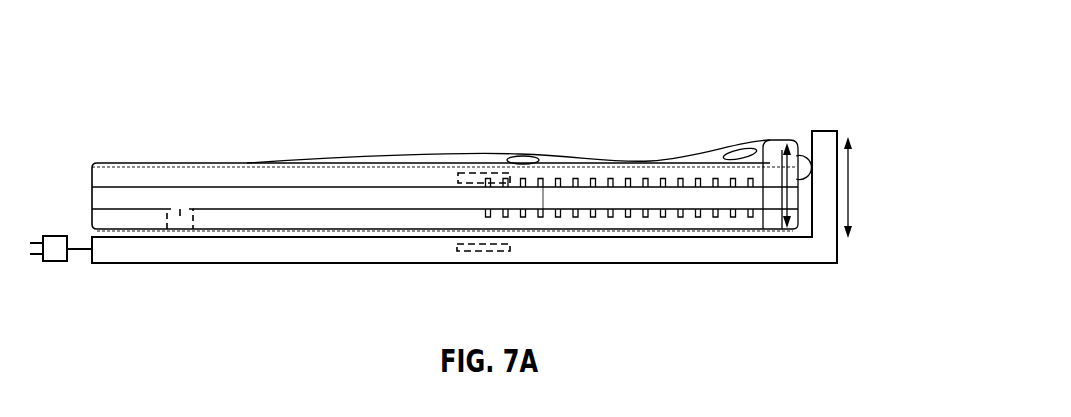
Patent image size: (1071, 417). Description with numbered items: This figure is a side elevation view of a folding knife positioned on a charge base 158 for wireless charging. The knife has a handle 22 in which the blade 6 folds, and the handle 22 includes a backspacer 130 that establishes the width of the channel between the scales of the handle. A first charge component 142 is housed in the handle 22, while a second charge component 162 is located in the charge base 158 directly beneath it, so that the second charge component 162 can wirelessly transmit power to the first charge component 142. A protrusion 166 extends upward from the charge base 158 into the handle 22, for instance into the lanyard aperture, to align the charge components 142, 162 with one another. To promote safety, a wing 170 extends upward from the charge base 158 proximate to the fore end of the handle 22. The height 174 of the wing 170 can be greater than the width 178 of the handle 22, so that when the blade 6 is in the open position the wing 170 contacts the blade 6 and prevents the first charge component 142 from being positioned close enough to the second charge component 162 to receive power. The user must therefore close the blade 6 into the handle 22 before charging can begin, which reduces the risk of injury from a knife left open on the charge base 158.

The handle 22 is at (869, 39).
The blade 6 is at (670, 197).
The backspacer 130 is at (387, 205).
The first charge component 142 is at (478, 173).
The charge base 158 is at (637, 274).
The second charge component 162 is at (487, 252).
The protrusion 166 is at (180, 209).
The wing 170 is at (822, 137).
The height of the wing 174 is at (850, 187).
The width of the handle 178 is at (786, 143).